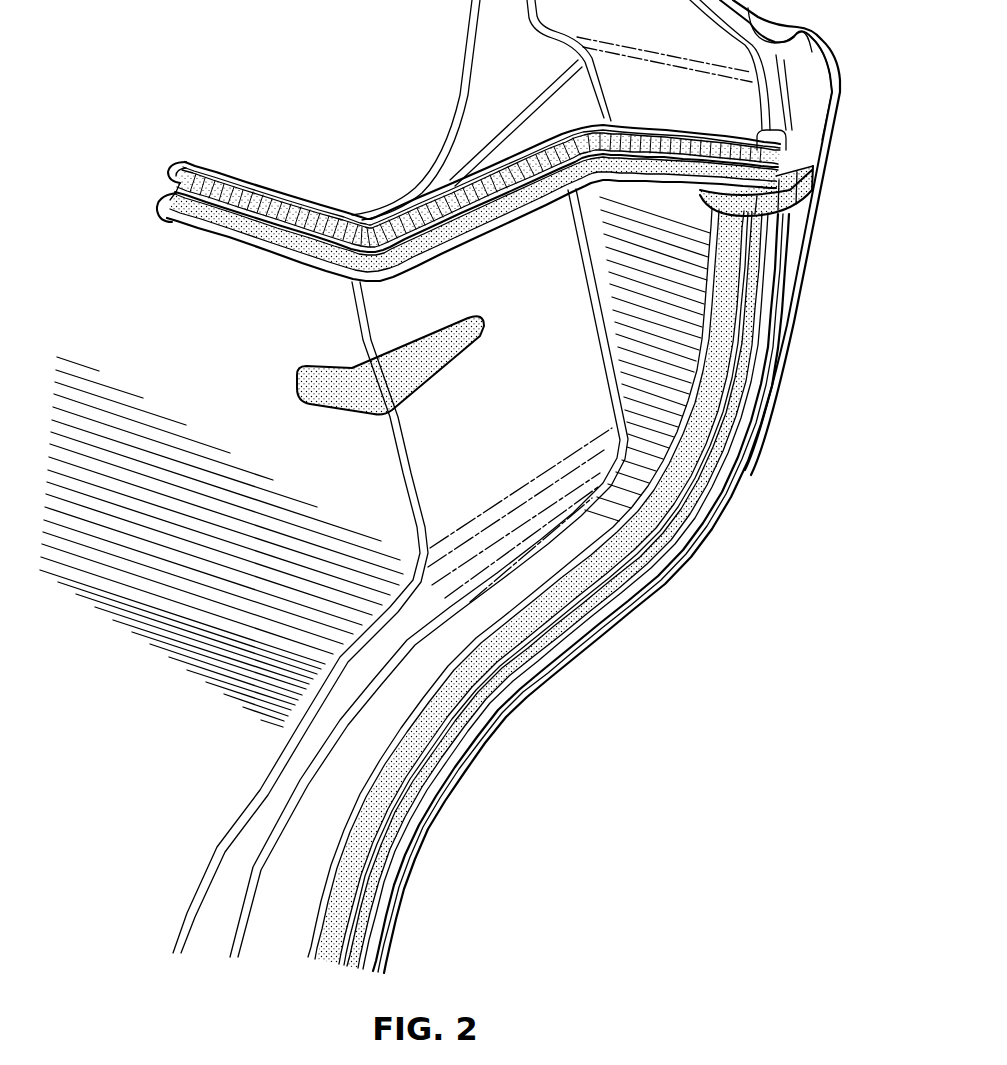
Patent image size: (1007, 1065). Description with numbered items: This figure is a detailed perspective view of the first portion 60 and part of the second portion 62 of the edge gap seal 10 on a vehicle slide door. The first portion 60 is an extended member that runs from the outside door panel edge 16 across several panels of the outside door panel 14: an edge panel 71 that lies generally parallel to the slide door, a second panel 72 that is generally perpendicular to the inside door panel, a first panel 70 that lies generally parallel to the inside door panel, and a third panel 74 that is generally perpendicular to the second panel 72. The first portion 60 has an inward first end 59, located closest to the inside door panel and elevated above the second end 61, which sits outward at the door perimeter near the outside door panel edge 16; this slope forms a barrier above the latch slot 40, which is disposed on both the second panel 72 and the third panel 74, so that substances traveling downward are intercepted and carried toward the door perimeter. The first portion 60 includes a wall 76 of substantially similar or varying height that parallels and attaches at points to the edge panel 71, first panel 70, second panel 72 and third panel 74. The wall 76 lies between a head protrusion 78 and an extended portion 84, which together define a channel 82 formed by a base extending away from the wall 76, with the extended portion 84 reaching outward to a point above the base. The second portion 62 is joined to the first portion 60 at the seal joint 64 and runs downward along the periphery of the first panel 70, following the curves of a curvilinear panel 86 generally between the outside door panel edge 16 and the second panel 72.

The edge gap seal 10 is at (796, 237).
The outside door panel 14 is at (137, 725).
The outside door panel edge 16 is at (831, 104).
The latch slot 40 is at (420, 375).
The first end 59 is at (172, 174).
The first portion 60 is at (433, 203).
The second end 61 is at (790, 175).
The second portion 62 is at (548, 591).
The seal joint 64 is at (799, 202).
The first panel 70 is at (705, 233).
The edge panel 71 is at (786, 47).
The second panel 72 is at (535, 380).
The third panel 74 is at (117, 333).
The wall 76 is at (174, 188).
The head protrusion 78 is at (182, 162).
The channel 82 is at (166, 195).
The extended portion 84 is at (190, 226).
The curvilinear panel 86 is at (322, 840).